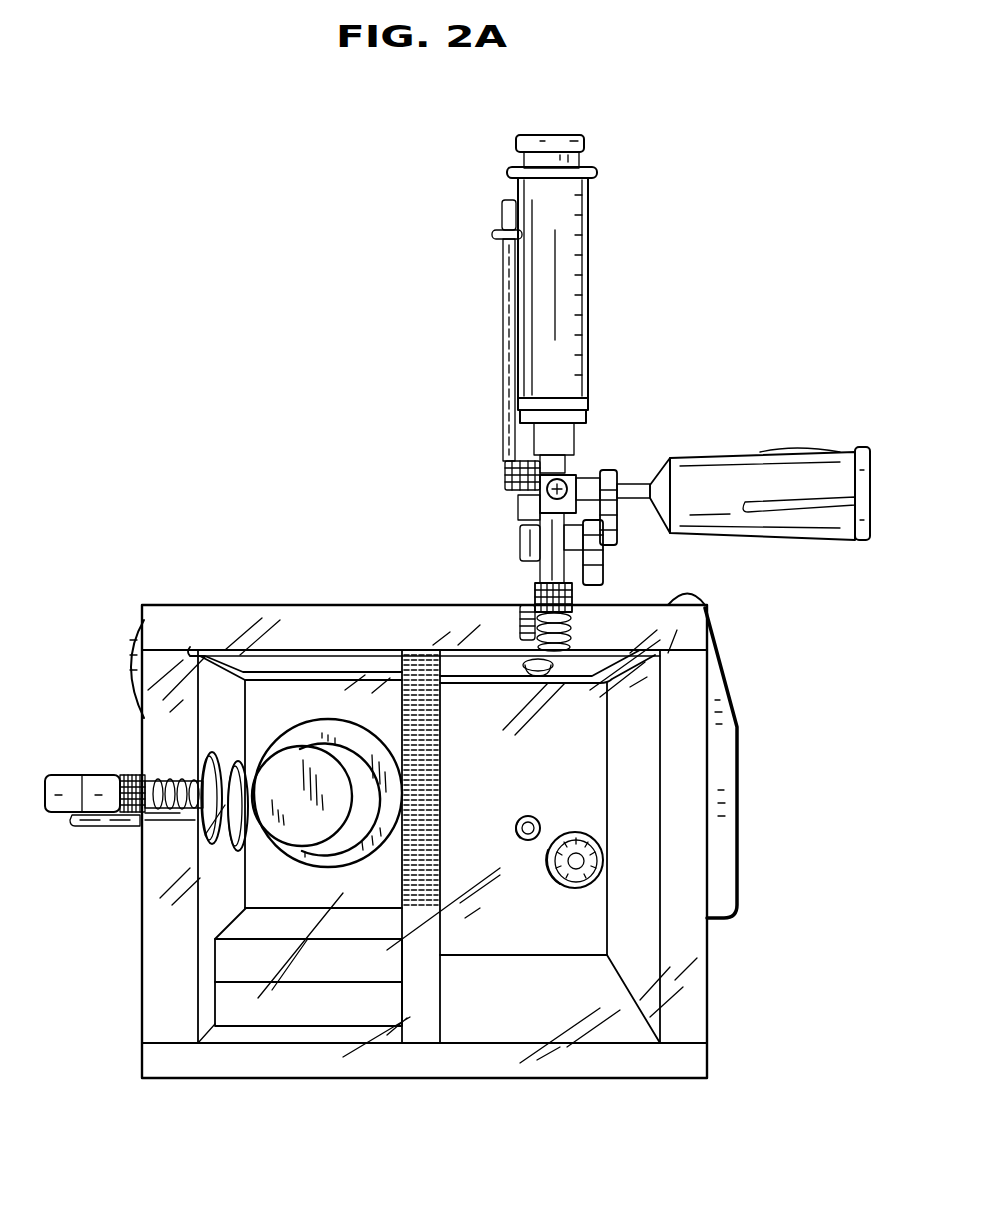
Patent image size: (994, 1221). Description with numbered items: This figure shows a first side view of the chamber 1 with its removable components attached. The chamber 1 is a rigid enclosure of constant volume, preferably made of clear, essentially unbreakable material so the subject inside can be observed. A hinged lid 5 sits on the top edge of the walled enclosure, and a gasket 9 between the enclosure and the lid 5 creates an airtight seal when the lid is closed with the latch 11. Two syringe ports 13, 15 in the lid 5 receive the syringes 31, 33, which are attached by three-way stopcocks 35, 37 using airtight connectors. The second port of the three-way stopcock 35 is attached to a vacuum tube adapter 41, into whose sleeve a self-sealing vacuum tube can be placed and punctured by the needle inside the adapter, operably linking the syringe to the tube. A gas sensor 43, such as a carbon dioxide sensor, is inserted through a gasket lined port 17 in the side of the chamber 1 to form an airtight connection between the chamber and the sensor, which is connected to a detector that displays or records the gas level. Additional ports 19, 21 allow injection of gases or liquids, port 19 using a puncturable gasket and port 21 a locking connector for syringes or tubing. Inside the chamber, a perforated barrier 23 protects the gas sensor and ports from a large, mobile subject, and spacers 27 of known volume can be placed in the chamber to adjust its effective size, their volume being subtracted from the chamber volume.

The chamber 1 is at (100, 638).
The hinged lid 5 is at (322, 618).
The gasket 9 is at (263, 652).
The latch 11 is at (727, 718).
The syringe port 13 is at (573, 600).
The syringe port 15 is at (522, 625).
The gasket lined port 17 is at (357, 740).
The additional port 19 is at (571, 840).
The additional port 21 is at (78, 775).
The barrier 23 is at (420, 978).
The spacers 27 is at (230, 950).
The syringe 31 is at (588, 313).
The syringe 33 is at (500, 283).
The 3-way stopcock 35 is at (603, 472).
The 3-way stopcock 37 is at (518, 545).
The vacuum tube adapter 41 is at (717, 460).
The gas sensor 43 is at (272, 777).